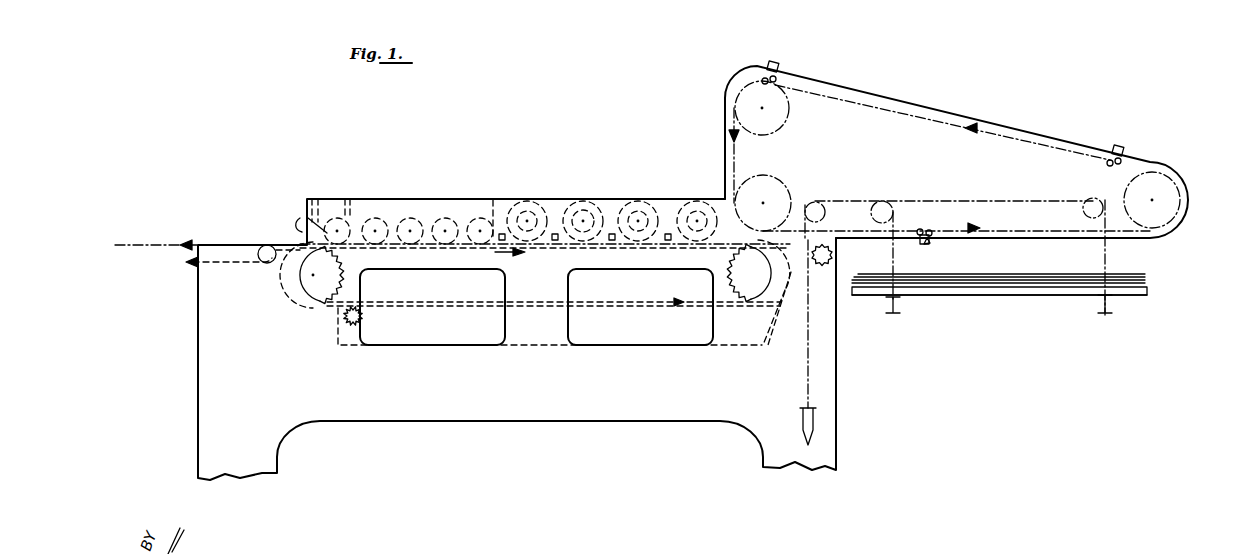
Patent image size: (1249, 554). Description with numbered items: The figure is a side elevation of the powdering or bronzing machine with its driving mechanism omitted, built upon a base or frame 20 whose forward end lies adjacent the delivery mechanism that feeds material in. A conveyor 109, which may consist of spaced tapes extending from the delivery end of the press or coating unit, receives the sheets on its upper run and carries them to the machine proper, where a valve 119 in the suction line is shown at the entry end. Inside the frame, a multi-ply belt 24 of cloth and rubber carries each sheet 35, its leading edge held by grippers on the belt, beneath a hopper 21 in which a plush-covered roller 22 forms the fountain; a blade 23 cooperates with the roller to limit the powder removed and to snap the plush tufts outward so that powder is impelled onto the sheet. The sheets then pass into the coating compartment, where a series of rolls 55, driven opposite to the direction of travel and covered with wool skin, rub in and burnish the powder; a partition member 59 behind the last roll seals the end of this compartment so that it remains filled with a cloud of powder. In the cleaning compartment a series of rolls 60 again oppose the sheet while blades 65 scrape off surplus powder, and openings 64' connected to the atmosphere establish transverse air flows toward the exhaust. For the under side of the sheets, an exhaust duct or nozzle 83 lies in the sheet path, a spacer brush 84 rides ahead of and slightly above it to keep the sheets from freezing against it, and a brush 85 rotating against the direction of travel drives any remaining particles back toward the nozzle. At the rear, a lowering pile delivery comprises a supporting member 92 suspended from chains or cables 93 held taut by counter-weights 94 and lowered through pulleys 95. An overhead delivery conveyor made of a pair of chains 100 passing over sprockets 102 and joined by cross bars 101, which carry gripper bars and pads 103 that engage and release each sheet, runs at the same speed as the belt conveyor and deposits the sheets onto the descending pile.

The base or frame 20 is at (385, 422).
The hopper 21 is at (338, 212).
The roller 22 is at (328, 235).
The blade 23 is at (322, 210).
The multi-ply belt 24 is at (468, 247).
The sheet 35 is at (1147, 284).
The rolls 55 is at (440, 220).
The partition member 59 is at (493, 207).
The rolls 60 is at (532, 212).
The openings 64' is at (585, 260).
The blades 65 is at (566, 208).
The exhaust duct or nozzle 83 is at (790, 268).
The spacer brush 84 is at (792, 250).
The brush 85 is at (833, 256).
The supporting member 92 is at (985, 292).
The chains or cables 93 is at (890, 262).
The counter-weights 94 is at (816, 421).
The pulleys 95 is at (890, 200).
The chains 100 is at (1010, 133).
The cross bars 101 is at (772, 82).
The sprockets 102 is at (790, 103).
The gripper bars and pads 103 is at (776, 68).
The conveyor 109 is at (183, 232).
The valve 119 is at (348, 320).